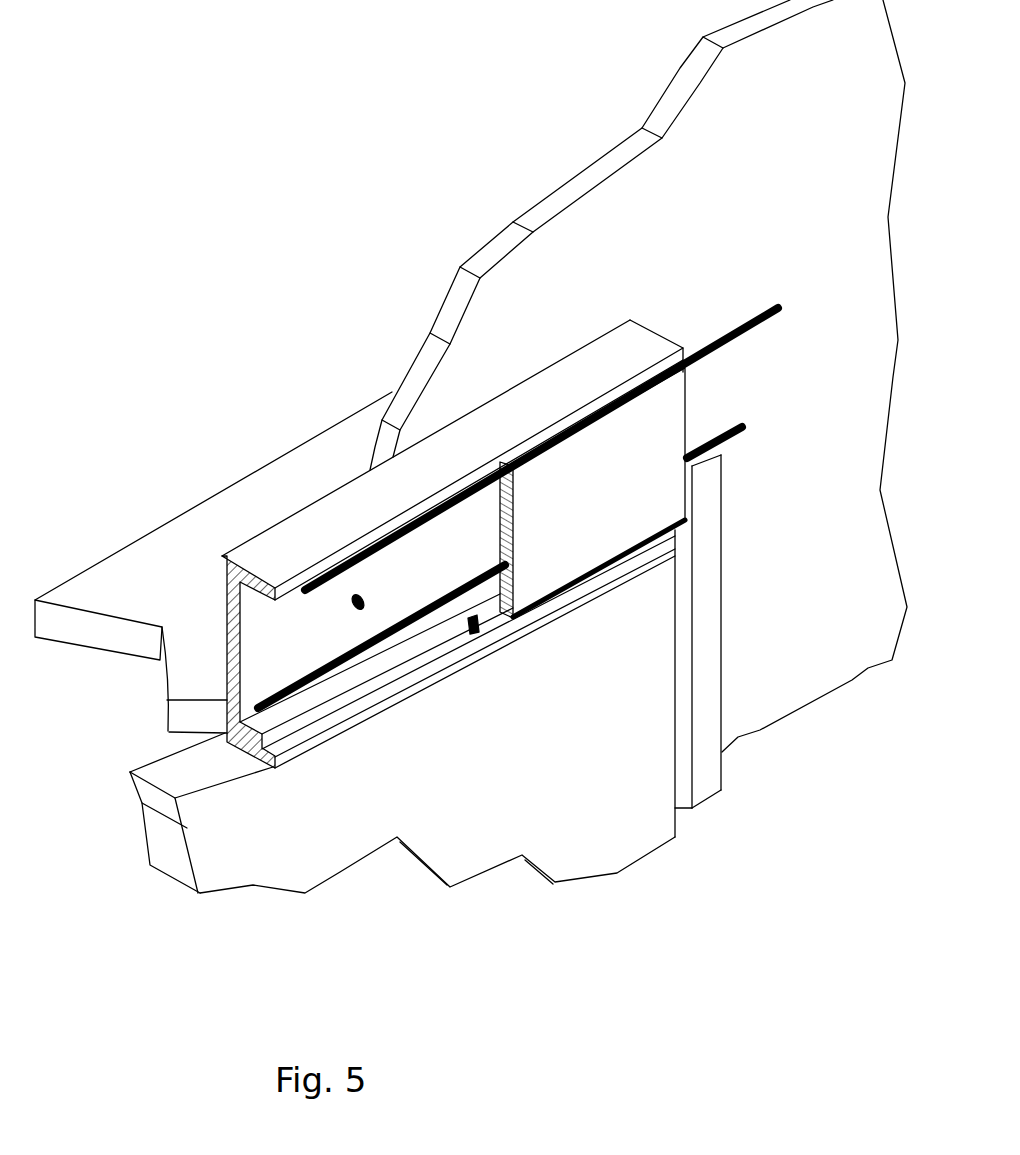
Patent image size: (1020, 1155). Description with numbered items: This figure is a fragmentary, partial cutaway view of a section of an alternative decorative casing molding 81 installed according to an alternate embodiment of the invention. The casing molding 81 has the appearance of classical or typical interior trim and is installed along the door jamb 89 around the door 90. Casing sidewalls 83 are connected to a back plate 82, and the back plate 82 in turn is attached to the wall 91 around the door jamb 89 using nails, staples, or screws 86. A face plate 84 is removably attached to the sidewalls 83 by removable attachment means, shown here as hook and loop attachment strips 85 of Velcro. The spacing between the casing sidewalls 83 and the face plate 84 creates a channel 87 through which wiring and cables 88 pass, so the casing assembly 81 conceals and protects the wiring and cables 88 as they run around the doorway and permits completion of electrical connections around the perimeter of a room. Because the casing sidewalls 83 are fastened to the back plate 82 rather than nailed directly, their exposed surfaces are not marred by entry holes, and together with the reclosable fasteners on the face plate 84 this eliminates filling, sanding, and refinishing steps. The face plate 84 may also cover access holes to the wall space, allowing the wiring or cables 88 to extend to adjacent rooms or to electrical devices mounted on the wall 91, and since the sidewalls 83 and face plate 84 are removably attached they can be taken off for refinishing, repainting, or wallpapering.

The casing molding 81 is at (462, 614).
The back plate 82 is at (301, 644).
The casing sidewalls 83 is at (230, 632).
The face plate 84 is at (604, 478).
The hook and loop attachment strips 85 is at (473, 628).
The nails, staples, or screws 86 is at (358, 593).
The channel 87 is at (494, 543).
The wiring and cables 88 is at (766, 305).
The door jamb 89 is at (692, 690).
The door 90 is at (428, 794).
The wall 91 is at (871, 594).